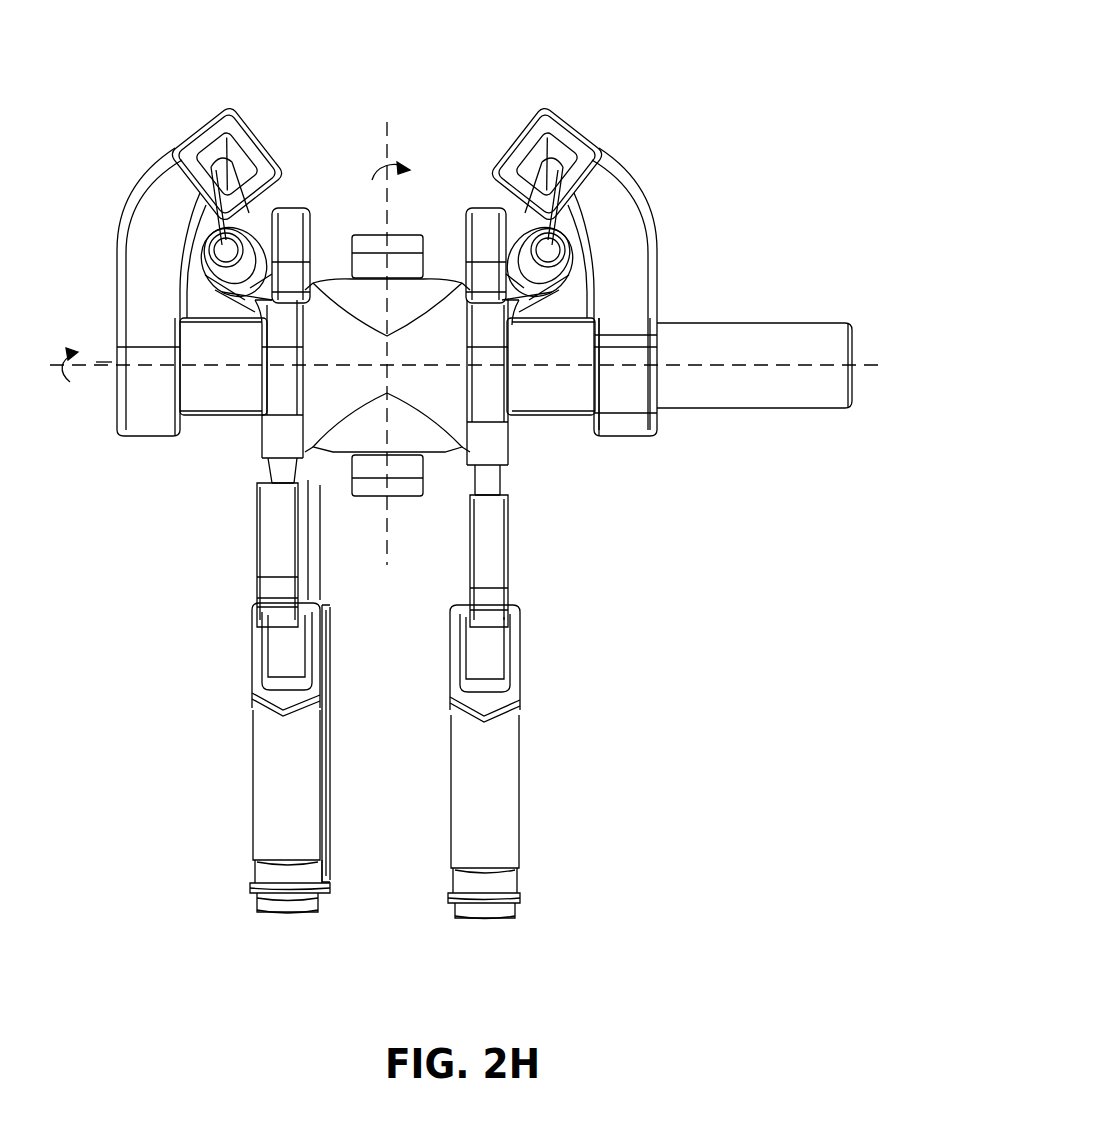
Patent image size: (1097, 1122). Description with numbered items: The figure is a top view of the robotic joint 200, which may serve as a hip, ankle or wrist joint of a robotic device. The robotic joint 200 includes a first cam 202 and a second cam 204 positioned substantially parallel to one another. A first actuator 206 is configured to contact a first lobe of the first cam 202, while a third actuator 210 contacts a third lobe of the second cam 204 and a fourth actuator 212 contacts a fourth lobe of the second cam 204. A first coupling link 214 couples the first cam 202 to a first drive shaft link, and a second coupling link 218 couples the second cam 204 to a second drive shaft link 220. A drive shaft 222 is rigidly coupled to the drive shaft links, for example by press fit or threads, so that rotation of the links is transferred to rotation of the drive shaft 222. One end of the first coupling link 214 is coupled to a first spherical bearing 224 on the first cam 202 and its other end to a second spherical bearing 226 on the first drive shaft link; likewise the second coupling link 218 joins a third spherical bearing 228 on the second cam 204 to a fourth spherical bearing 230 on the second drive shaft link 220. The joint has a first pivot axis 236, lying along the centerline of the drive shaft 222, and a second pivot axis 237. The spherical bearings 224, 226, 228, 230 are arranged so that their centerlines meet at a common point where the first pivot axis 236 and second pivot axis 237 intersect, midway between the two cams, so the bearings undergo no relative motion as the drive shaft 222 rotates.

The robotic joint 200 is at (706, 66).
The first cam 202 is at (508, 536).
The second cam 204 is at (257, 536).
The first actuator 206 is at (518, 795).
The third actuator 210 is at (254, 806).
The fourth actuator 212 is at (328, 778).
The first coupling link 214 is at (526, 208).
The second coupling link 218 is at (247, 208).
The second drive shaft link 220 is at (136, 182).
The drive shaft 222 is at (755, 326).
The first spherical bearing 224 is at (642, 182).
The second spherical bearing 226 is at (566, 134).
The third spherical bearing 228 is at (216, 247).
The fourth spherical bearing 230 is at (206, 134).
The first pivot axis 236 is at (100, 364).
The second pivot axis 237 is at (386, 140).